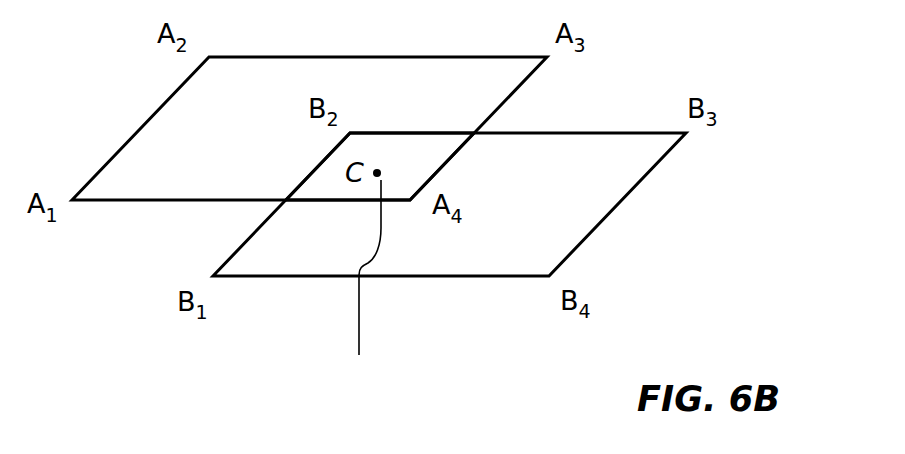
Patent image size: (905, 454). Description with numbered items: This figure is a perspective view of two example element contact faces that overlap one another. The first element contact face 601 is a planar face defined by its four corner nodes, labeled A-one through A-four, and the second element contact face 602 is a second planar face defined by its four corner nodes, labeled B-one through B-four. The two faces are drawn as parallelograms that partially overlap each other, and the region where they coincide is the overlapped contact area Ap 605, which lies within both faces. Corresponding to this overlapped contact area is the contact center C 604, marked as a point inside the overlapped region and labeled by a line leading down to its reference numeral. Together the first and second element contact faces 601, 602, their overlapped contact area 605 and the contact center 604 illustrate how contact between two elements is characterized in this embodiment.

The first element contact face 601 is at (262, 93).
The second element contact face 602 is at (539, 260).
The overlapped contact area 605 is at (434, 168).
The contact center 604 is at (359, 276).